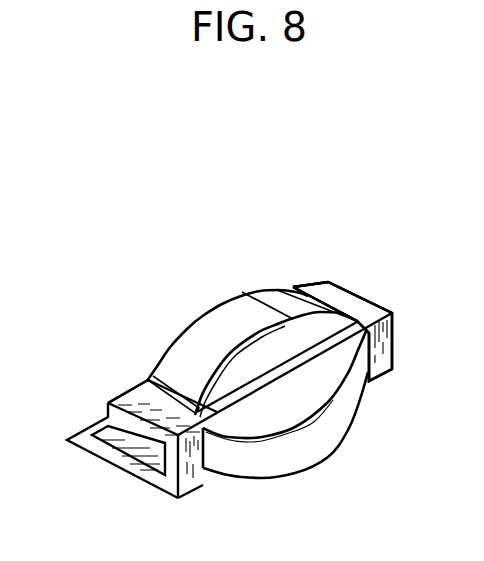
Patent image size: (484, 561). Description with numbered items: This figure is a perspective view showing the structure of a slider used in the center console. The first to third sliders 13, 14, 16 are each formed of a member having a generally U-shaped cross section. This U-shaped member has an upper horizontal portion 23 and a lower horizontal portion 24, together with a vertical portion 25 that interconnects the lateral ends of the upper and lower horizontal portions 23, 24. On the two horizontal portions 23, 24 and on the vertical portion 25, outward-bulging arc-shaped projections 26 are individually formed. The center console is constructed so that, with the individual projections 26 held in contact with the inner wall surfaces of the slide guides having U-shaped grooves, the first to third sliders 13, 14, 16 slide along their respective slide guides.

The first slider 13 is at (341, 268).
The second slider 14 is at (342, 331).
The third slider 16 is at (342, 331).
The upper horizontal portion 23 is at (130, 397).
The lower horizontal portion 24 is at (121, 458).
The vertical portion 25 is at (192, 472).
The arc-shaped projection 26 is at (252, 318).